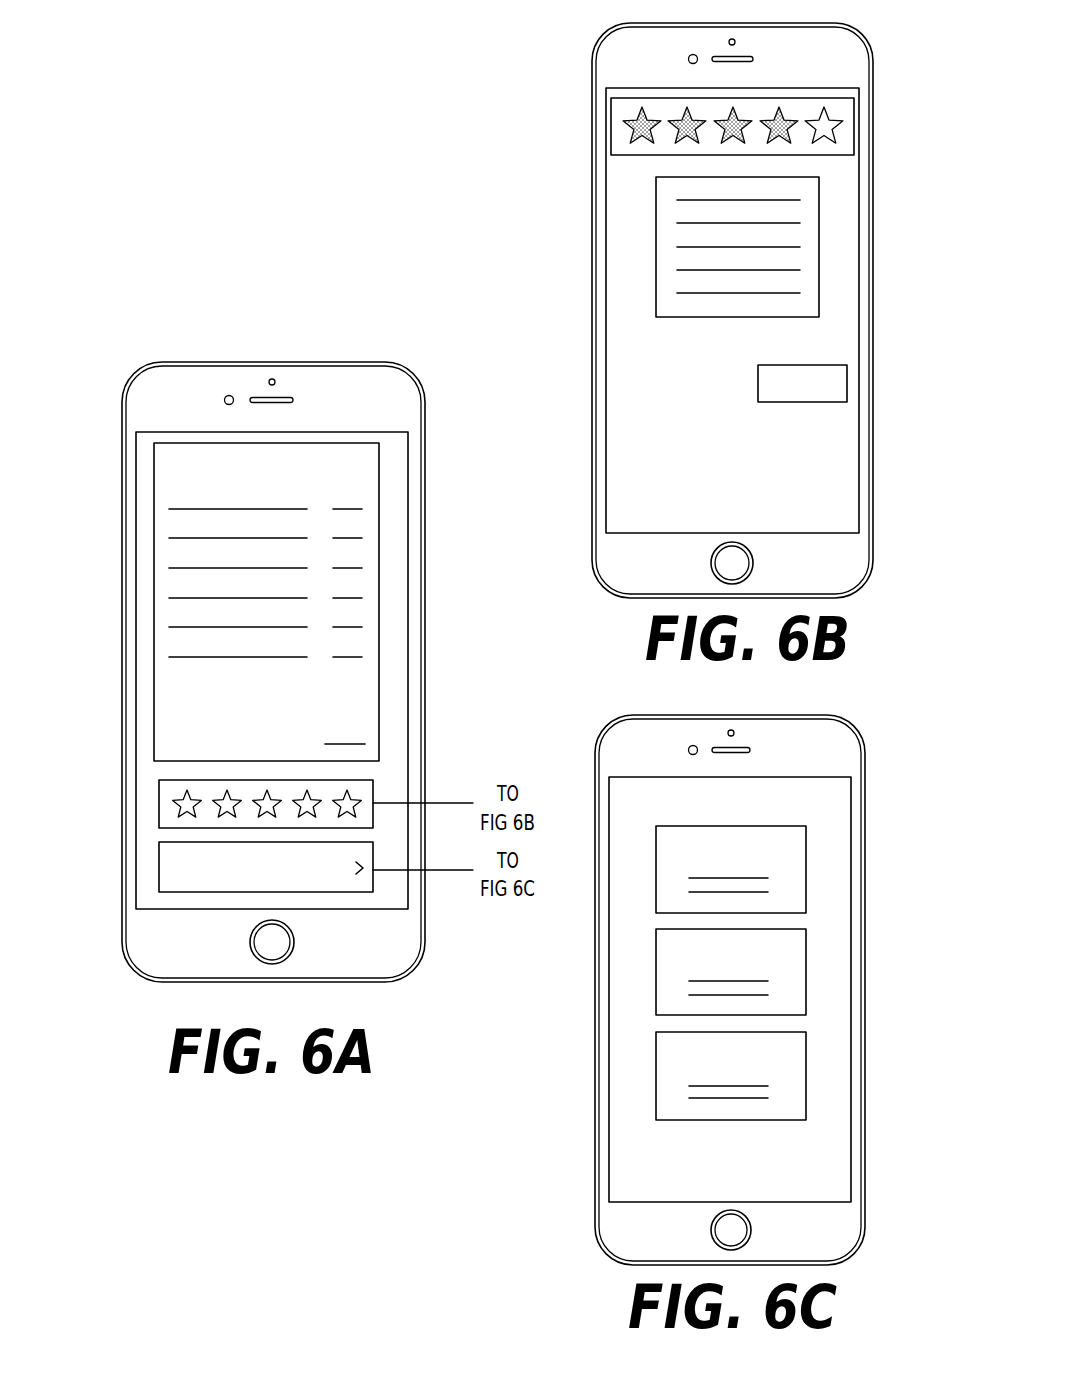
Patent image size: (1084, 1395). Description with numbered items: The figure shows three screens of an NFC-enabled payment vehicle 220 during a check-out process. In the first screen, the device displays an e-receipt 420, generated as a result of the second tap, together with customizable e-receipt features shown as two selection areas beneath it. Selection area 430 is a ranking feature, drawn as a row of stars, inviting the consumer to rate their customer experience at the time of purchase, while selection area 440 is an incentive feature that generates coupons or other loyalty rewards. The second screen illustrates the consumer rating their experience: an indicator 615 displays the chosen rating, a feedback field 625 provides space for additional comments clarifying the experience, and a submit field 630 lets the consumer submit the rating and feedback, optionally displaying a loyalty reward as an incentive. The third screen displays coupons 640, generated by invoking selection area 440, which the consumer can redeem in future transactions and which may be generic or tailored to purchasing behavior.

In FIG. 6A, the NFC-enabled payment vehicle 220 is at (310, 362).
In FIG. 6A, the e-receipt 420 is at (154, 475).
In FIG. 6A, the selection area 430 is at (159, 808).
In FIG. 6A, the selection area 440 is at (159, 865).
In FIG. 6B, the indicator 615 is at (611, 123).
In FIG. 6B, the feedback field 625 is at (819, 216).
In FIG. 6B, the submit field 630 is at (847, 382).
In FIG. 6C, the coupons 640 is at (806, 868).